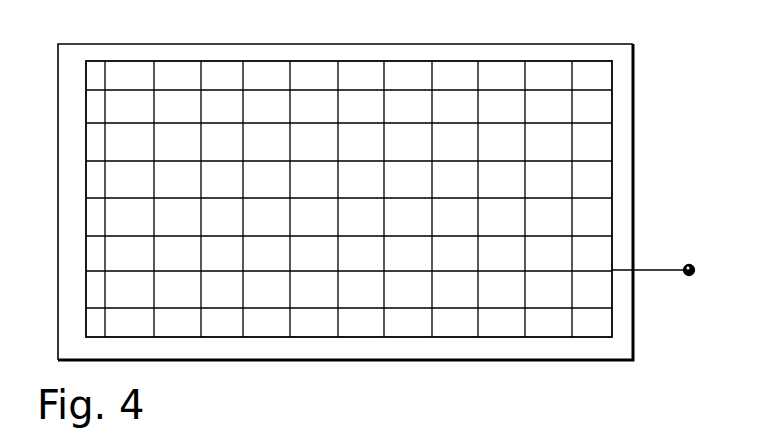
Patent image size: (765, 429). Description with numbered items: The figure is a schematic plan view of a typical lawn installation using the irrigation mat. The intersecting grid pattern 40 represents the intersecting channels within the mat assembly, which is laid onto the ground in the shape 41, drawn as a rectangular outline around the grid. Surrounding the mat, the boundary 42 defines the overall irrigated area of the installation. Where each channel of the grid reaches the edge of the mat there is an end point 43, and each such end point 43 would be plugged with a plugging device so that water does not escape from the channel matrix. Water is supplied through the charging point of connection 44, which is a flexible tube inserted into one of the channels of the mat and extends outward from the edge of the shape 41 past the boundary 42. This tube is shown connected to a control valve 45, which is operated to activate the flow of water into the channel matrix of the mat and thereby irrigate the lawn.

The intersecting grid pattern 40 is at (340, 122).
The shape 41 is at (555, 60).
The boundary 42 is at (634, 100).
The end point 43 is at (243, 60).
The charging point of connection 44 is at (612, 270).
The control valve 45 is at (689, 276).